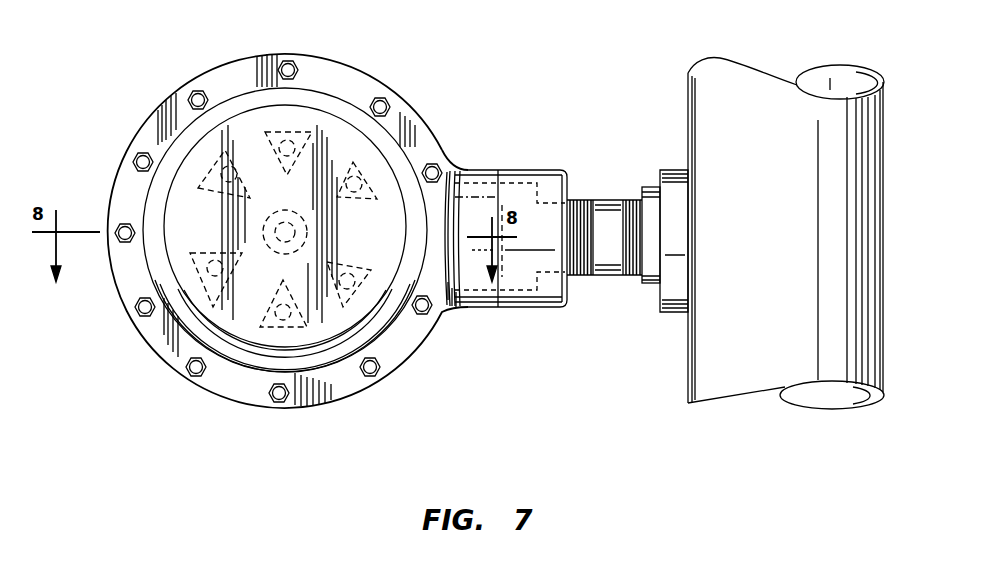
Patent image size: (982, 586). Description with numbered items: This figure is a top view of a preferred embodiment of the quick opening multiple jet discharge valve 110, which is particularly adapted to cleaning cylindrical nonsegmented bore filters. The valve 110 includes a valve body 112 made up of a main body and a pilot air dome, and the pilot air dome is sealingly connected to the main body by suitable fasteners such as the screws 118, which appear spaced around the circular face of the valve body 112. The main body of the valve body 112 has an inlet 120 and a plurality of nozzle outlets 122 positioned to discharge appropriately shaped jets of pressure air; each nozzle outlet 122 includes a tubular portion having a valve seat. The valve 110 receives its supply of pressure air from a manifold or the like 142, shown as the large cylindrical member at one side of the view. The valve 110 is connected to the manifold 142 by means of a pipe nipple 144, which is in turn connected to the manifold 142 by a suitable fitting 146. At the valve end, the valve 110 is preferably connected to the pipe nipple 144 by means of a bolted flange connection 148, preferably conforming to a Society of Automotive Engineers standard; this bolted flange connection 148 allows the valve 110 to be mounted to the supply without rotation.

The quick opening multiple jet discharge valve 110 is at (332, 53).
The valve body 112 is at (403, 362).
The screws 118 is at (284, 64).
The inlet 120 is at (502, 198).
The nozzle outlets 122 is at (238, 168).
The manifold 142 is at (686, 120).
The pipe nipple 144 is at (603, 272).
The fitting 146 is at (662, 171).
The bolted flange connection 148 is at (512, 308).